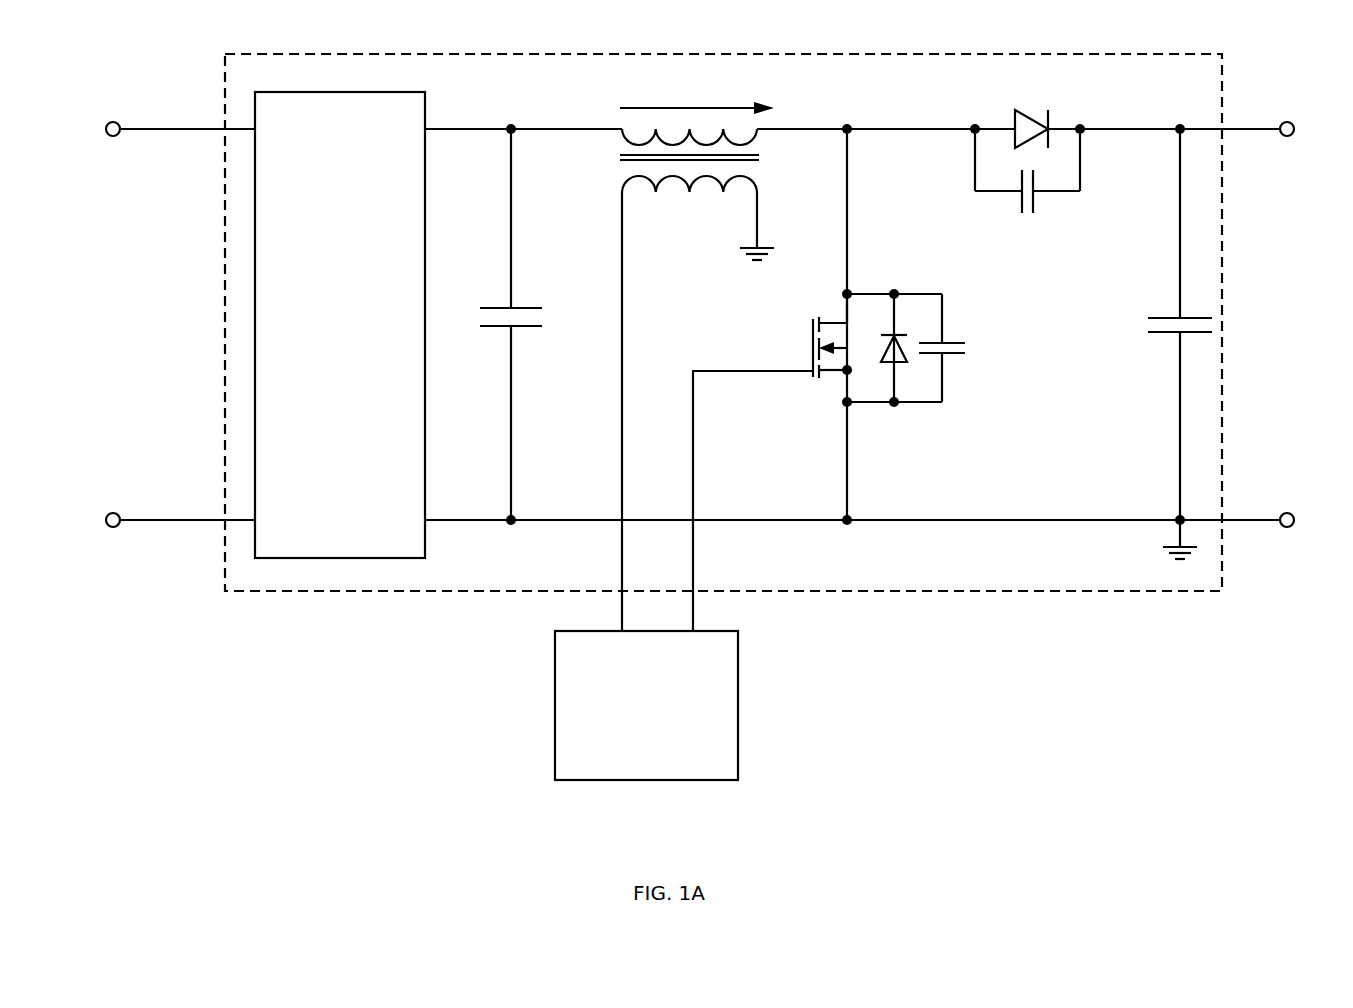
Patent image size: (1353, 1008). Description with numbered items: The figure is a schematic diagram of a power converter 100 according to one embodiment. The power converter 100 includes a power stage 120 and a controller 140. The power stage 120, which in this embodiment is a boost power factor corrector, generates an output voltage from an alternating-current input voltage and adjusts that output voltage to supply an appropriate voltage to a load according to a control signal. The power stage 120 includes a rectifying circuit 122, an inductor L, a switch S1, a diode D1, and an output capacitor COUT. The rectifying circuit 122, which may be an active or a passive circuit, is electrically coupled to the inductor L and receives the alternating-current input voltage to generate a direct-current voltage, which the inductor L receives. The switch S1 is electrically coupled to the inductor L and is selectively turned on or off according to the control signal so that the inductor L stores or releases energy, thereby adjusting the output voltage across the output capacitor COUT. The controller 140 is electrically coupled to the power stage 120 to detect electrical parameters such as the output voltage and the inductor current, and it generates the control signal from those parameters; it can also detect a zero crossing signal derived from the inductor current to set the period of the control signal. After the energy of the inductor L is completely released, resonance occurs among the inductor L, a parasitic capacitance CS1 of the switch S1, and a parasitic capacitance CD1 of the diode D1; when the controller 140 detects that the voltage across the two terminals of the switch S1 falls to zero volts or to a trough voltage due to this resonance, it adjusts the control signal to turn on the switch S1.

The power converter 100 is at (474, 682).
The power stage 120 is at (1097, 593).
The rectifying circuit 122 is at (357, 362).
The controller 140 is at (740, 703).
The inductor L is at (602, 149).
The switch S1 is at (829, 382).
The parasitic capacitance of the switch CS1 is at (930, 348).
The diode D1 is at (1031, 114).
The parasitic capacitance of the diode CD1 is at (1027, 191).
The output capacitor COUT is at (1143, 324).